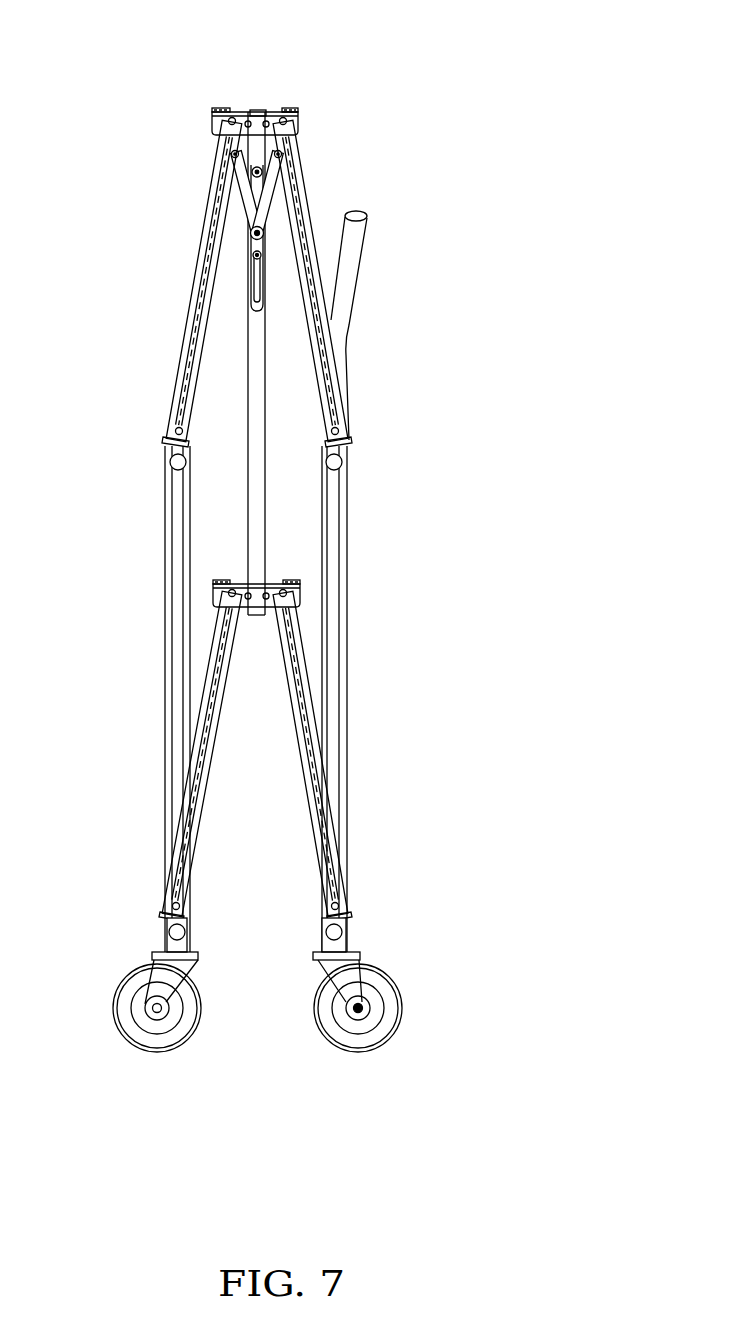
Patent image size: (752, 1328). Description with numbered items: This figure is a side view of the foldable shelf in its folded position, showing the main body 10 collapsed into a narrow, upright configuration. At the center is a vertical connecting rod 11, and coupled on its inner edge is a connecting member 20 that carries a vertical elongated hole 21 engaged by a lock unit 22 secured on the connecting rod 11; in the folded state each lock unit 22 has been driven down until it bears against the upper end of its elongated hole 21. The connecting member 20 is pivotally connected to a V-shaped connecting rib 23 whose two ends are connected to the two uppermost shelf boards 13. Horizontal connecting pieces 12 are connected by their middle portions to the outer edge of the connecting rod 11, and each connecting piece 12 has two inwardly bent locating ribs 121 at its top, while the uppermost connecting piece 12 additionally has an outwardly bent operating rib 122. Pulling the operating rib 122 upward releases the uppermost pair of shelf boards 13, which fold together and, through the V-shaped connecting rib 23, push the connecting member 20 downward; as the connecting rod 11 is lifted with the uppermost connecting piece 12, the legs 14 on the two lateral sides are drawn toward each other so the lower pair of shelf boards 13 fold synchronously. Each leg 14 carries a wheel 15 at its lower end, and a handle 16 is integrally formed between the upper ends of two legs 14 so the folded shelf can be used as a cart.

The main body 10 is at (410, 430).
The connecting rod 11 is at (255, 355).
The connecting piece 12 is at (298, 117).
The locating rib 121 is at (292, 107).
The operating rib 122 is at (268, 108).
The shelf board 13 is at (318, 366).
The leg 14 is at (330, 552).
The wheel 15 is at (368, 1008).
The handle 16 is at (350, 250).
The connecting member 20 is at (236, 238).
The elongated hole 21 is at (255, 278).
The lock unit 22 is at (252, 255).
The V-shaped connecting rib 23 is at (244, 192).